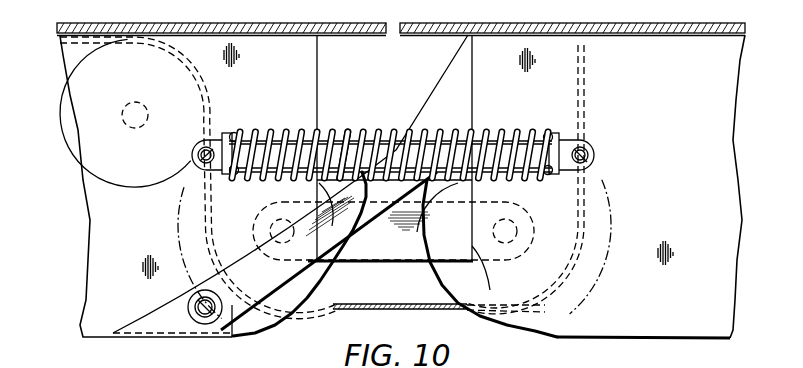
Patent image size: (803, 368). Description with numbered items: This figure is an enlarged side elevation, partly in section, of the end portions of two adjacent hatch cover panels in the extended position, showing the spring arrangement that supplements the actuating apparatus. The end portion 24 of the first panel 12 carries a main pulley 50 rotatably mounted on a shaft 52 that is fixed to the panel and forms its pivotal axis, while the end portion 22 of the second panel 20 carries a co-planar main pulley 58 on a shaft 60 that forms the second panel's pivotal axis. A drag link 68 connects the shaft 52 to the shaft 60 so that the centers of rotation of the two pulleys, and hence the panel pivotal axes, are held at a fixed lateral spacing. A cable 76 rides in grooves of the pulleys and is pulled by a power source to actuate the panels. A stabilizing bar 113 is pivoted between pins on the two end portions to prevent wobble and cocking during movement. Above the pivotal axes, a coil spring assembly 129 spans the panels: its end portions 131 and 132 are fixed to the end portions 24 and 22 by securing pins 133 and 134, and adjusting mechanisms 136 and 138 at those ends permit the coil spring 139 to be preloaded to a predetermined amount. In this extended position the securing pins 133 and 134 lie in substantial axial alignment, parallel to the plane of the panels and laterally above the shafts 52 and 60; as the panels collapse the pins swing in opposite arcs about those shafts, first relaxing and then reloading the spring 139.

The first panel 12 is at (57, 22).
The second panel 20 is at (745, 22).
The end portion of the second panel 22 is at (706, 116).
The end portion of the first panel 24 is at (136, 249).
The main pulley 50 is at (302, 316).
The shaft 52 is at (268, 213).
The main pulley 58 is at (470, 318).
The shaft 60 is at (526, 214).
The drag link 68 is at (397, 256).
The cable 76 is at (356, 306).
The stabilizing bar 113 is at (247, 258).
The coil spring assembly 129 is at (392, 131).
The end portion of the spring assembly 131 is at (203, 141).
The end portion of the spring assembly 132 is at (586, 143).
The securing pin 133 is at (197, 151).
The securing pin 134 is at (594, 153).
The adjusting mechanism 136 is at (232, 133).
The adjusting mechanism 138 is at (556, 134).
The coil spring 139 is at (346, 138).